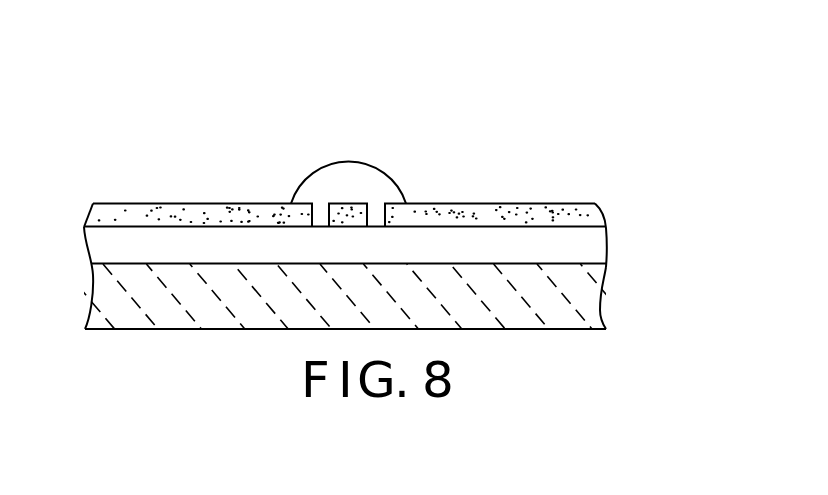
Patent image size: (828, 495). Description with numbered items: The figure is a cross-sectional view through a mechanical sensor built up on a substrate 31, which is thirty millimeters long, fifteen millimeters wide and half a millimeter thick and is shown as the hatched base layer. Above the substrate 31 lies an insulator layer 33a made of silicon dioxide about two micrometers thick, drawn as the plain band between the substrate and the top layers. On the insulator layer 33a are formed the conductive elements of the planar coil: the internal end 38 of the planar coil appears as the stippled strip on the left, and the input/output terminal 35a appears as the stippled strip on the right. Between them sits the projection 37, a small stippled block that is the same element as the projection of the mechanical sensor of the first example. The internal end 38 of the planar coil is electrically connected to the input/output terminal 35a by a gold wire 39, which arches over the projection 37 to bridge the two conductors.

The substrate 31 is at (592, 300).
The insulator layer 33a is at (595, 248).
The input/output terminal 35a is at (548, 217).
The projection 37 is at (353, 210).
The internal end 38 is at (175, 208).
The gold wire 39 is at (393, 180).